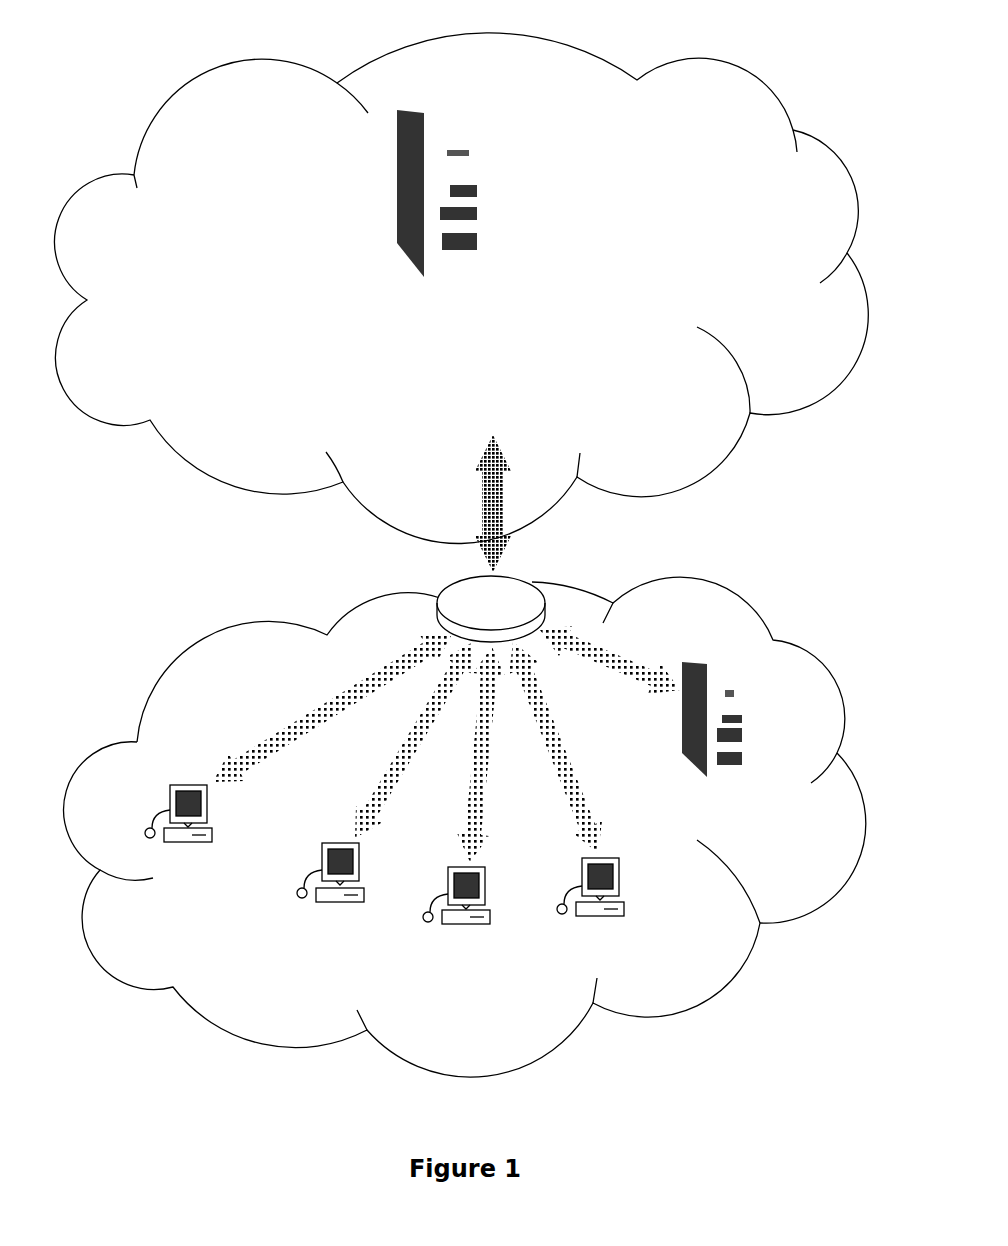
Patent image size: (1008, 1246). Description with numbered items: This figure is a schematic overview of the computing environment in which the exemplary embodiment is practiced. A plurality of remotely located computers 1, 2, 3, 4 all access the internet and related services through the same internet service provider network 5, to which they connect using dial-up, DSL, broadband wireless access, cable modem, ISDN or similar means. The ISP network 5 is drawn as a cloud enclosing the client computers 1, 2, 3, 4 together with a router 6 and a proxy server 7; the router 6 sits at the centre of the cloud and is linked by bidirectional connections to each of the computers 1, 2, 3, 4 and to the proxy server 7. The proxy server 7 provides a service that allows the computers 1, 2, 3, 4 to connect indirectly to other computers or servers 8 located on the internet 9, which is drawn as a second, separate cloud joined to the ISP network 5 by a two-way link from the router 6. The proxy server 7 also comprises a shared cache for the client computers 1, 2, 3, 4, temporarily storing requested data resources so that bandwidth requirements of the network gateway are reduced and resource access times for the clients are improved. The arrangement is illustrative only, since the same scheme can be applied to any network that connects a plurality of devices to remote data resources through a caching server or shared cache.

The remotely located computer 1 is at (185, 845).
The remotely located computer 2 is at (338, 904).
The remotely located computer 3 is at (467, 926).
The remotely located computer 4 is at (600, 913).
The internet service provider network 5 is at (137, 712).
The router 6 is at (491, 609).
The proxy server 7 is at (728, 765).
The server 8 is at (473, 218).
The internet 9 is at (740, 67).